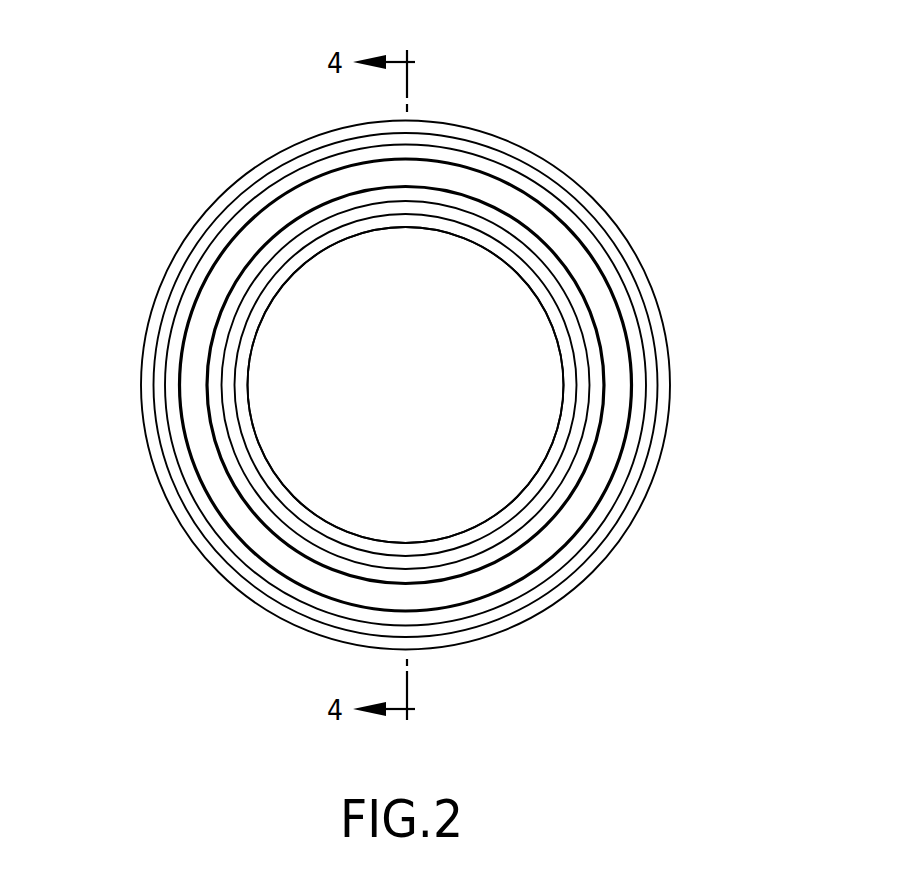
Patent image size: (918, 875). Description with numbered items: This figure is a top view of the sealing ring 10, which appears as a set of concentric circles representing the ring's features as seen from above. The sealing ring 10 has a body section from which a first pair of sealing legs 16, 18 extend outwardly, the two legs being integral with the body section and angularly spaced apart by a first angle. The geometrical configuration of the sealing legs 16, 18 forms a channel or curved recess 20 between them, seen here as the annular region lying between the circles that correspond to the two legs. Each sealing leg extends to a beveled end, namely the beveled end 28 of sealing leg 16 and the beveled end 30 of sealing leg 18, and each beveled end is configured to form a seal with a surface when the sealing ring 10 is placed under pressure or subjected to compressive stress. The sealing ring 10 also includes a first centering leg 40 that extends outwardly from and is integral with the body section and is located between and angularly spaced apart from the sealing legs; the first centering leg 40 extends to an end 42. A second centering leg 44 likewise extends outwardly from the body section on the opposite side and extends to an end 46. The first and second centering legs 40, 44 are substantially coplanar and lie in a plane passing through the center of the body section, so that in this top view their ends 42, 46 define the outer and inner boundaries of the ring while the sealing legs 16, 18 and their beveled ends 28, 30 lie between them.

The sealing ring 10 is at (532, 148).
The sealing leg 16 is at (178, 327).
The sealing leg 18 is at (275, 247).
The curved recess 20 is at (218, 288).
The beveled end 28 is at (157, 359).
The beveled end 30 is at (242, 318).
The first centering leg 40 is at (155, 465).
The end 42 is at (188, 540).
The second centering leg 44 is at (243, 365).
The end 46 is at (258, 443).